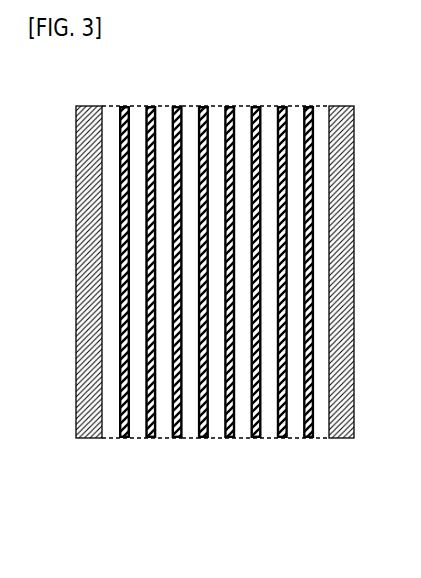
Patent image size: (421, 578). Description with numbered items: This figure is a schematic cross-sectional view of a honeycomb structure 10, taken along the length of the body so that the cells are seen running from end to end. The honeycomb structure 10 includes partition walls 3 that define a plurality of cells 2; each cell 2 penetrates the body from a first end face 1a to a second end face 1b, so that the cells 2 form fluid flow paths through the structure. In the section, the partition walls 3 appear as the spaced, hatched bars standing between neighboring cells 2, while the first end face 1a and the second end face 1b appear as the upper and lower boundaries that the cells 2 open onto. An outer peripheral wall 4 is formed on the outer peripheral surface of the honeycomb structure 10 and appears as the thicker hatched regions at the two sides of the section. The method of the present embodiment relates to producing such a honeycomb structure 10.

The honeycomb structure 10 is at (223, 299).
The outer peripheral wall 4 is at (338, 106).
The partition walls 3 is at (127, 106).
The cells 2 is at (187, 106).
The first end face 1a is at (243, 106).
The second end face 1b is at (218, 438).